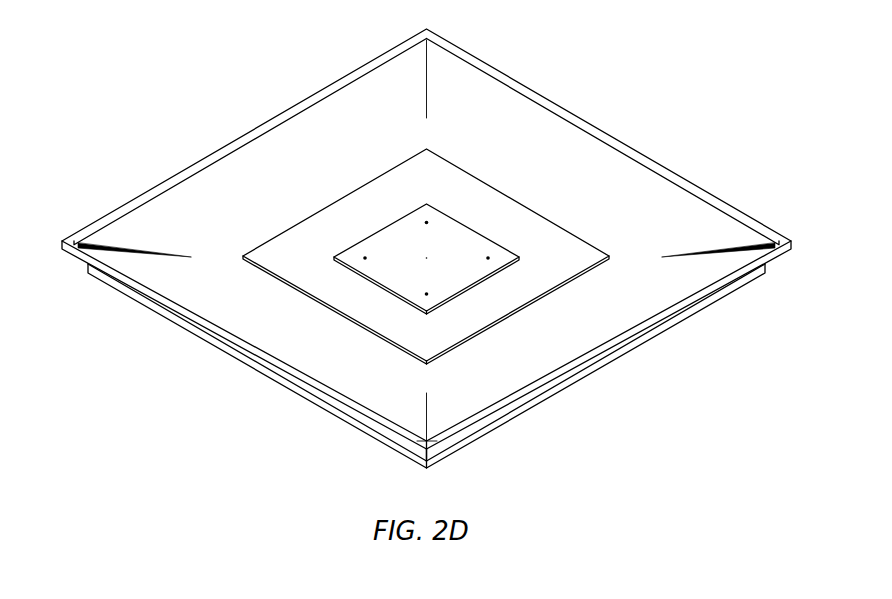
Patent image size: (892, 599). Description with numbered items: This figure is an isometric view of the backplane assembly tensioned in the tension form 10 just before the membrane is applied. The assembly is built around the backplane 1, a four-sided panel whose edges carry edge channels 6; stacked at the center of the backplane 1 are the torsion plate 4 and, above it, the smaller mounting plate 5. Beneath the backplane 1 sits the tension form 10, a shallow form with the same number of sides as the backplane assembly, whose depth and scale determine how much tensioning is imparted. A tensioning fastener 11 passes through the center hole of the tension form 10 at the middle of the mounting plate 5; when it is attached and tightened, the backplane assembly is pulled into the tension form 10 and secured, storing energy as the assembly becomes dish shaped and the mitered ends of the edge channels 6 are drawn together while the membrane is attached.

The backplane 1 is at (228, 187).
The torsion plate 4 is at (350, 217).
The mounting plate 5 is at (407, 230).
The edge channels 6 is at (97, 222).
The tension form 10 is at (310, 402).
The tensioning fastener 11 is at (426, 258).